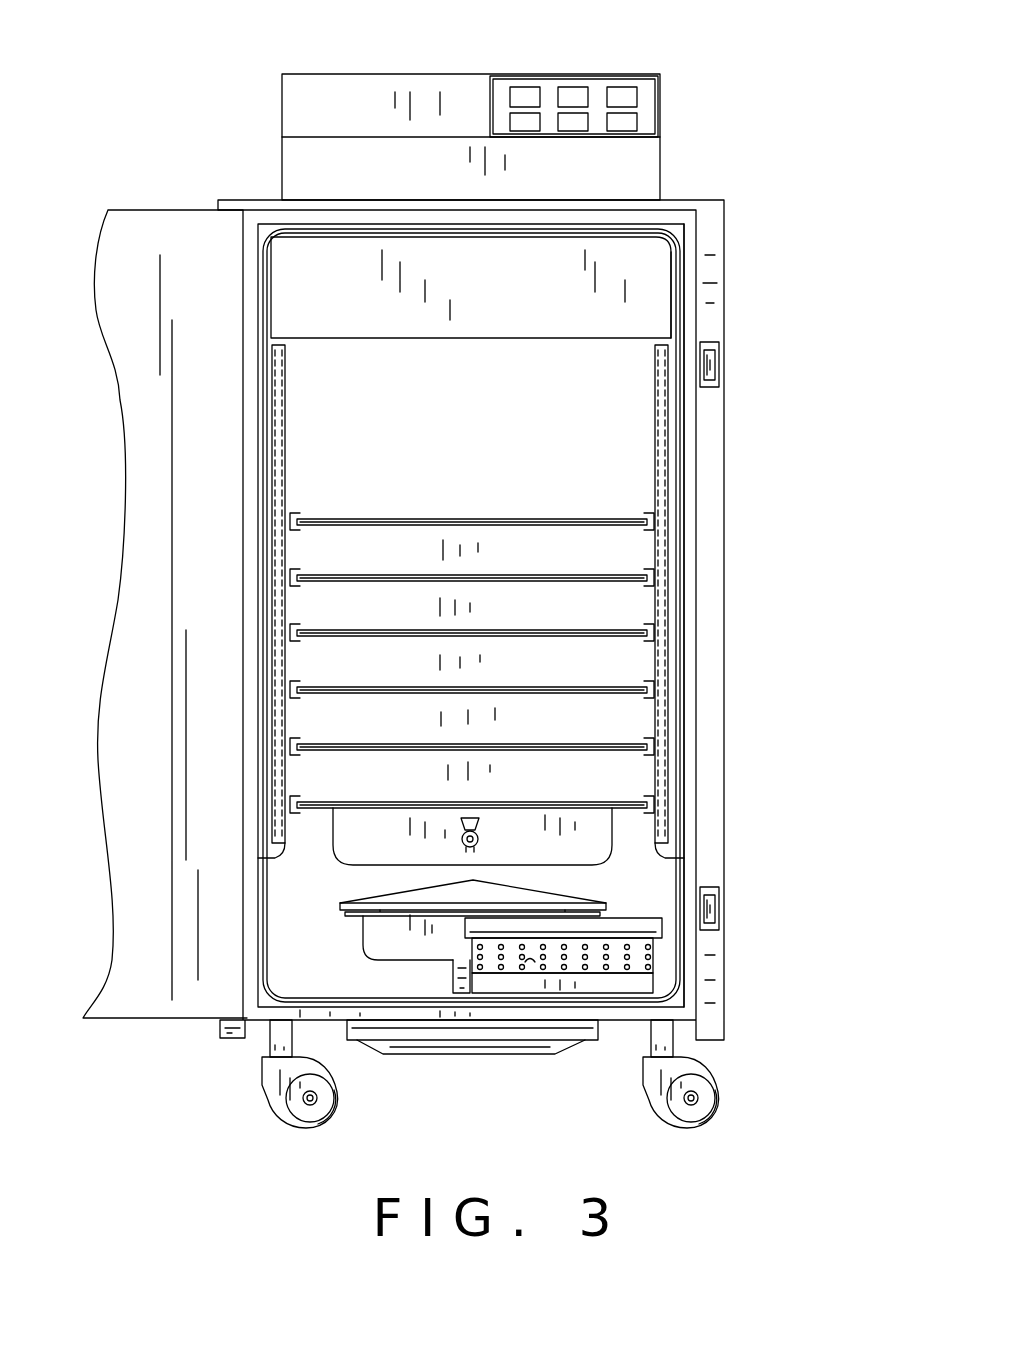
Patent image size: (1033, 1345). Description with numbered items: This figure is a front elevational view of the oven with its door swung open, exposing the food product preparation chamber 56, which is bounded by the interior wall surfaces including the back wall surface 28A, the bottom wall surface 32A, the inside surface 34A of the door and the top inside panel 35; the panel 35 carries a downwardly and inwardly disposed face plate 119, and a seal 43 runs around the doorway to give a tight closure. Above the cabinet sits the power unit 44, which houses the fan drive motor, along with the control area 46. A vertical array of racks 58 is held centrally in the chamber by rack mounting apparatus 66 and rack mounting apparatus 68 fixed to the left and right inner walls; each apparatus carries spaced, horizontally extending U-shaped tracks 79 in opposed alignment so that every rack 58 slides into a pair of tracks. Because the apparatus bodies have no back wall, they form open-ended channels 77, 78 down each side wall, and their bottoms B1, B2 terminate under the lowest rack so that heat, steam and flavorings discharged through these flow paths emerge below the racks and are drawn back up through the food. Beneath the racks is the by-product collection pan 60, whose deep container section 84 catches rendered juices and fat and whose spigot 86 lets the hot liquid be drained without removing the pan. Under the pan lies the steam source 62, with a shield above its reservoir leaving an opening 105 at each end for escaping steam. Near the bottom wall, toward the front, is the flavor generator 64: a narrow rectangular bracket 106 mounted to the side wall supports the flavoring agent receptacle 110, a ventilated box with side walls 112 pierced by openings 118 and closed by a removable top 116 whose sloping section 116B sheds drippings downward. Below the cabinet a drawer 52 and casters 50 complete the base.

The power unit 44 is at (547, 73).
The control panel buttons 46 is at (643, 97).
The face plate 119 is at (534, 252).
The top inside panel 35 is at (308, 279).
The seal 43 is at (650, 225).
The food product preparation chamber 56 is at (617, 370).
The rack mounting apparatus 68 is at (687, 408).
The open-ended channel 77 is at (285, 410).
The open-ended channel 78 is at (676, 462).
The inside surface of door 34A is at (187, 462).
The interior wall surface of back wall 28A is at (520, 425).
The rack mounting apparatus 66 is at (270, 512).
The racks 58 is at (627, 575).
The U-shaped tracks 79 is at (298, 578).
The by-product collection pan 60 is at (362, 836).
The container section 84 is at (352, 855).
The bottom of rack mounting apparatus 66 B1 is at (285, 858).
The bottom of rack mounting apparatus 68 B2 is at (575, 887).
The spigot 86 is at (464, 842).
The steam source 62 is at (620, 882).
The opening 105 is at (415, 901).
The flavoring agent receptacle 110 is at (507, 967).
The side walls 112 is at (532, 962).
The removable top 116 is at (633, 932).
The sloping section 116B is at (663, 934).
The flavor generator 64 is at (656, 962).
The openings 118 is at (653, 982).
The bracket 106 is at (638, 983).
The drawer 52 is at (522, 1050).
The casters 50 is at (723, 1098).
The interior wall surface of bottom wall 32A is at (317, 1003).